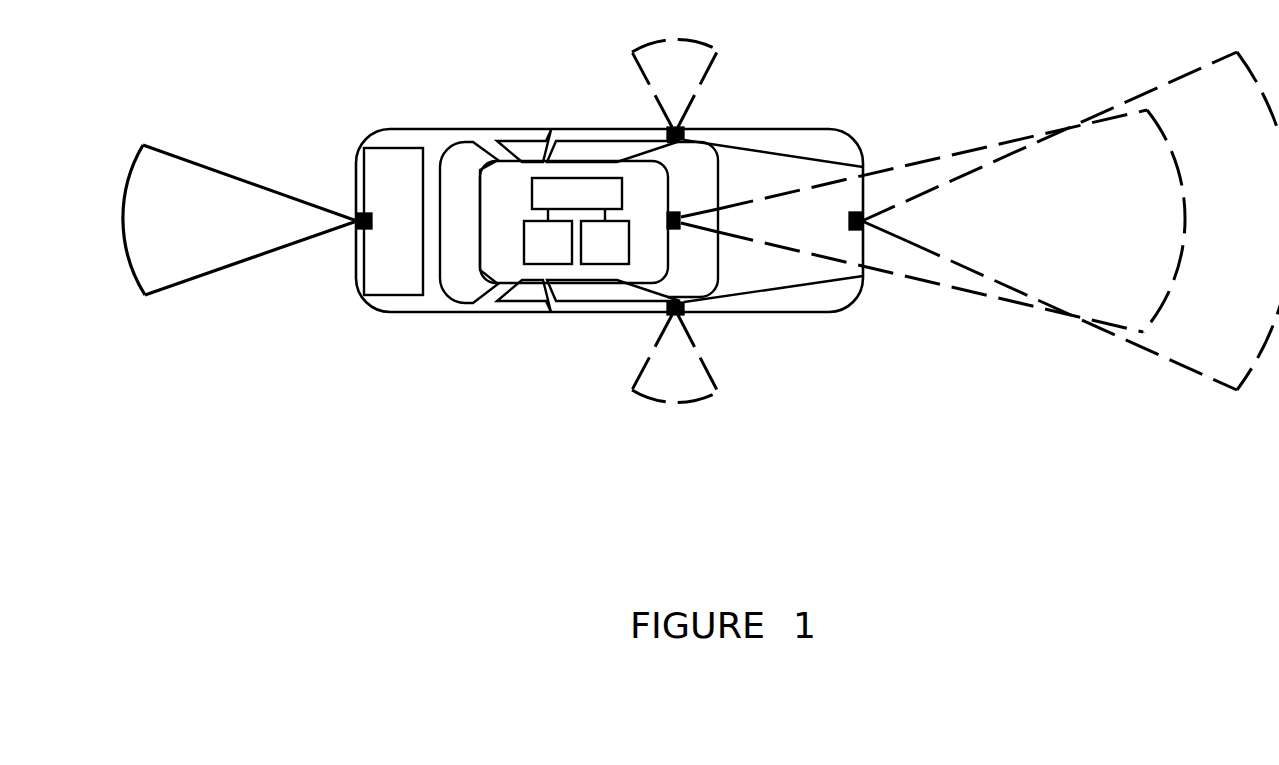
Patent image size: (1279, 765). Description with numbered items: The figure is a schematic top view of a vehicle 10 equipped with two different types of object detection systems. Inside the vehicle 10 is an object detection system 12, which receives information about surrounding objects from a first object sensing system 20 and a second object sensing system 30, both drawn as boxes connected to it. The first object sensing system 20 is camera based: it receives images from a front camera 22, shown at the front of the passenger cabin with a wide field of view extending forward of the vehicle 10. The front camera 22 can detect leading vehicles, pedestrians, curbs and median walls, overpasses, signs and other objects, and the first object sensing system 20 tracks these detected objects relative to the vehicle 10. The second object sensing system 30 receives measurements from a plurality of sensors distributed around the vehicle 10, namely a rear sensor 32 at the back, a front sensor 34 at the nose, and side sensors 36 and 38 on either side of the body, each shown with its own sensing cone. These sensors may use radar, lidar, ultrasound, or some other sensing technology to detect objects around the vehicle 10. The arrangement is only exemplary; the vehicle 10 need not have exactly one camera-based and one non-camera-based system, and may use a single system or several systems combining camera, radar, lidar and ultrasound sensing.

The vehicle 10 is at (440, 129).
The object detection system 12 is at (577, 199).
The first object sensing system 20 is at (605, 242).
The front camera 22 is at (673, 230).
The second object sensing system 30 is at (548, 242).
The rear sensor 32 is at (363, 214).
The front sensor 34 is at (862, 231).
The side sensor 36 is at (684, 128).
The side sensor 38 is at (684, 315).